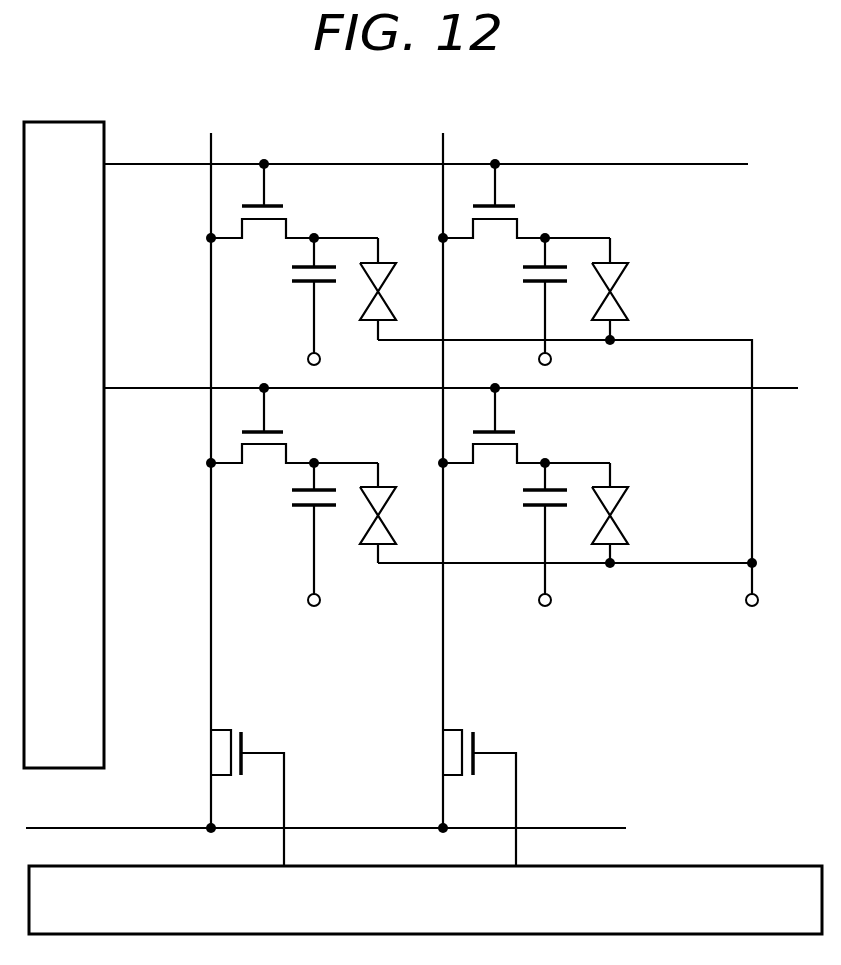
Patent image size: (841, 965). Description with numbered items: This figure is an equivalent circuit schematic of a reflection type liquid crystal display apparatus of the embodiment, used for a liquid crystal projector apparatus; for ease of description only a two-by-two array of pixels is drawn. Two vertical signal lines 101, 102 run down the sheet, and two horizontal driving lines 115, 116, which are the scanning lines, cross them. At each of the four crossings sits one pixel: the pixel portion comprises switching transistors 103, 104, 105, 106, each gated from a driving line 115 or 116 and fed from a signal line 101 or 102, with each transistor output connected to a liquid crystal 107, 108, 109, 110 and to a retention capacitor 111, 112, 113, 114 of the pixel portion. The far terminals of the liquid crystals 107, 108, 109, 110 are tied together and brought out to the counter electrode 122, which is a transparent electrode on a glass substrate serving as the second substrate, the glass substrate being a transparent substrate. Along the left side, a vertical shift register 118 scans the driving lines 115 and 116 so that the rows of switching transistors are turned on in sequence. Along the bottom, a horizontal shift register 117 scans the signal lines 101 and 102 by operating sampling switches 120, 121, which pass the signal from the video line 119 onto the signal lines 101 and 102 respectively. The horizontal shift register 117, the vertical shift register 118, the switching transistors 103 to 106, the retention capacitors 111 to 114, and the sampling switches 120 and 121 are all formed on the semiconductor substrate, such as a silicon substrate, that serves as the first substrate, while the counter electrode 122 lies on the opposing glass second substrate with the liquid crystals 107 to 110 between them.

The signal line 101 is at (211, 662).
The signal line 102 is at (443, 665).
The switching transistor 103 is at (287, 211).
The switching transistor 104 is at (518, 211).
The switching transistor 105 is at (287, 436).
The switching transistor 106 is at (518, 436).
The liquid crystal 107 is at (382, 262).
The liquid crystal 108 is at (624, 275).
The liquid crystal 109 is at (382, 487).
The liquid crystal 110 is at (624, 499).
The retention capacitor 111 is at (298, 282).
The retention capacitor 112 is at (531, 282).
The retention capacitor 113 is at (298, 505).
The retention capacitor 114 is at (528, 505).
The driving line 115 is at (628, 163).
The driving line 116 is at (158, 387).
The horizontal shift register 117 is at (742, 865).
The vertical shift register 118 is at (70, 122).
The video line 119 is at (596, 826).
The sampling switch 120 is at (243, 733).
The sampling switch 121 is at (475, 733).
The counter electrode 122 is at (752, 608).